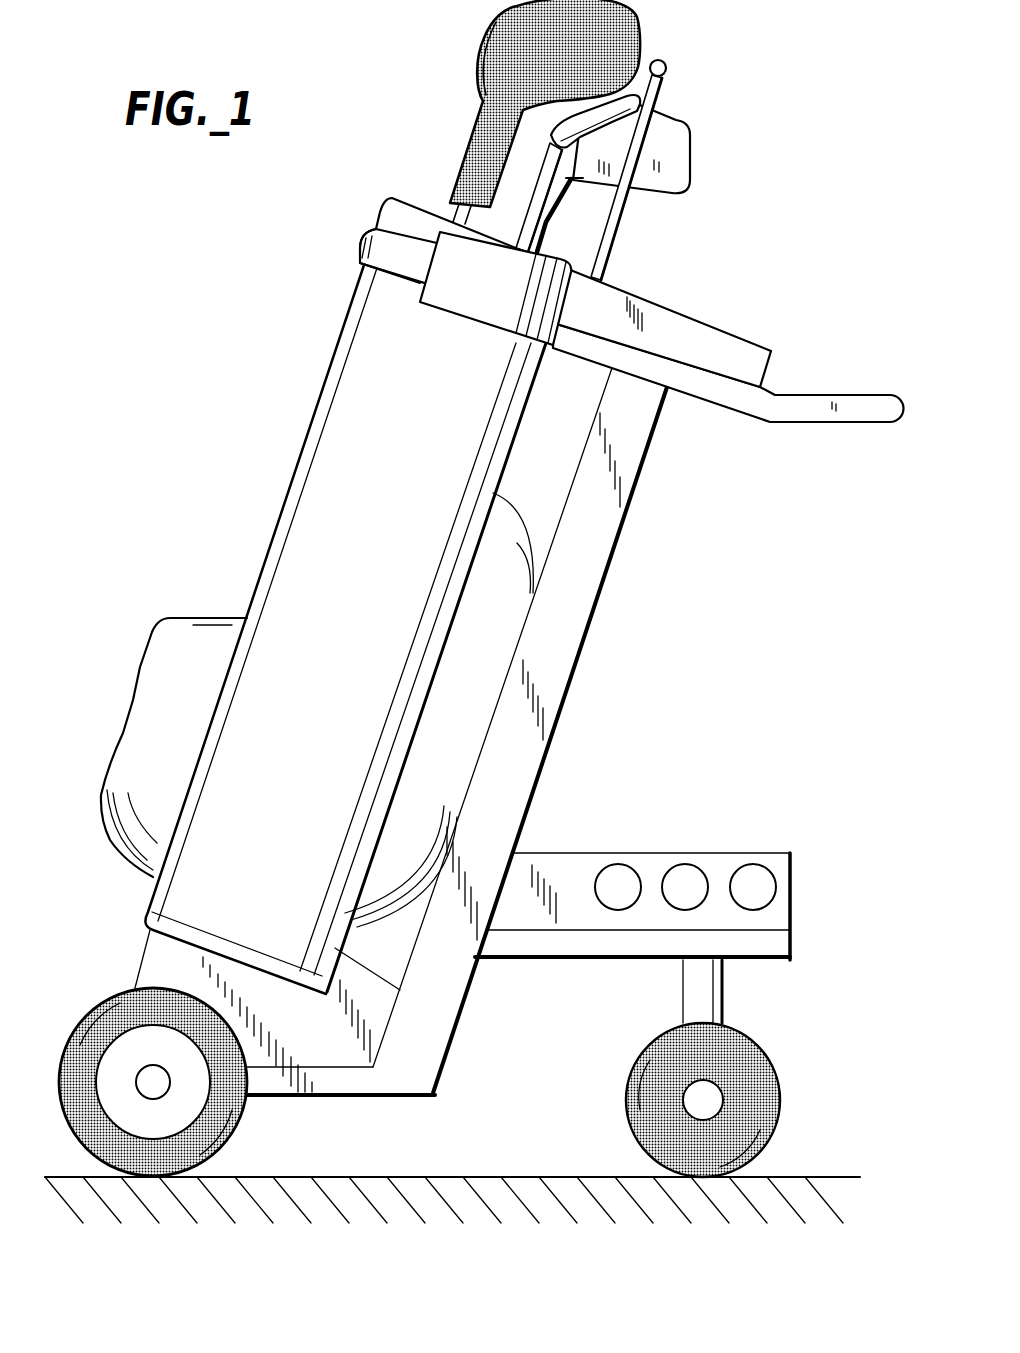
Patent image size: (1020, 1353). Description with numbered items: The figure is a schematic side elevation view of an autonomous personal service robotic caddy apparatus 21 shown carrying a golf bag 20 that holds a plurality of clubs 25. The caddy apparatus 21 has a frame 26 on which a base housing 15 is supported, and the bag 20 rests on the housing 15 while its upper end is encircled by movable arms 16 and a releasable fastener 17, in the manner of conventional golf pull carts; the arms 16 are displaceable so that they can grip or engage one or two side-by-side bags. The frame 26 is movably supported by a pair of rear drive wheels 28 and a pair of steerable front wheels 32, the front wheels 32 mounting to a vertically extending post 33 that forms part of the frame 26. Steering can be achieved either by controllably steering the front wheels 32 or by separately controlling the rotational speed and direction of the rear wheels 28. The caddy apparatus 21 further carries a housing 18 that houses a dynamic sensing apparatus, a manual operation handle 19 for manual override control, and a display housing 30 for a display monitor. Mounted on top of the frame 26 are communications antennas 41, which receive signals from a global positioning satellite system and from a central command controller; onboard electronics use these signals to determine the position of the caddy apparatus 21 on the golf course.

The base housing 15 is at (153, 970).
The movable arms 16 is at (440, 292).
The releasable fastener 17 is at (407, 237).
The housing 18 is at (792, 900).
The manual operation handle 19 is at (843, 393).
The golf bag 20 is at (292, 462).
The robotic caddy apparatus 21 is at (481, 682).
The clubs 25 is at (560, 193).
The frame 26 is at (583, 360).
The rear drive wheels 28 is at (240, 1130).
The display housing 30 is at (668, 318).
The front wheels 32 is at (743, 1037).
The post 33 is at (723, 1000).
The communications antennas 41 is at (617, 197).